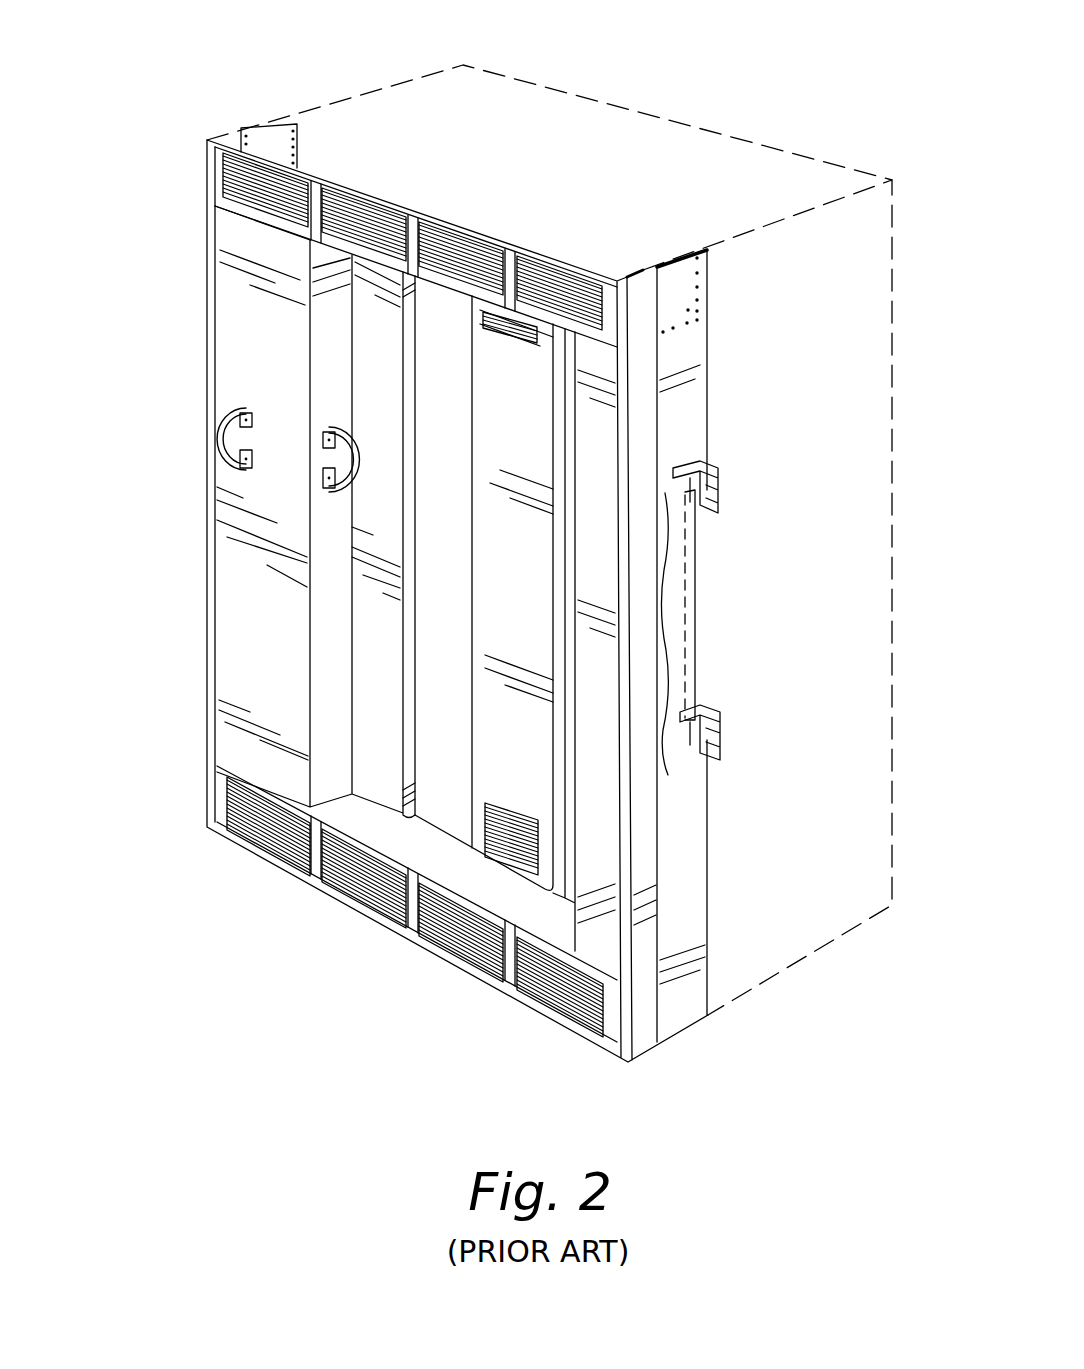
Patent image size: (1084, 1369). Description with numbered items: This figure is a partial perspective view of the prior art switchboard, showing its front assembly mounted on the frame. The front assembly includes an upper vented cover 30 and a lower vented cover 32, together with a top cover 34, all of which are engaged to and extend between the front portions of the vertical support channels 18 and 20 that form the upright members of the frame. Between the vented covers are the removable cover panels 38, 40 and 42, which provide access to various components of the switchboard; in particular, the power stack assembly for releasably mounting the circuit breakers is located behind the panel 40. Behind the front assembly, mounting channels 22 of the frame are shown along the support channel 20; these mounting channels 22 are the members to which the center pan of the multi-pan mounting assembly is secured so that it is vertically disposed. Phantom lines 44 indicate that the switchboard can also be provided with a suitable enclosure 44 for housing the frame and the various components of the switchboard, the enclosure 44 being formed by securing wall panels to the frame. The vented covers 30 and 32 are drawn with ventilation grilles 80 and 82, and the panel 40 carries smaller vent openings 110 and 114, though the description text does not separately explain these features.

The vertical support channel 18 is at (275, 124).
The vertical support channel 20 is at (683, 250).
The mounting channel 22 is at (718, 507).
The upper vented cover 30 is at (410, 216).
The lower vented cover 32 is at (417, 940).
The top cover 34 is at (287, 228).
The removable cover panel 38 is at (380, 407).
The removable cover panel 40 is at (493, 579).
The removable cover panel 42 is at (590, 745).
The enclosure 44 is at (395, 78).
The lower ventilation grille 80 is at (353, 890).
The upper ventilation grille 82 is at (300, 168).
The lower vent 110 is at (497, 807).
The upper vent 114 is at (520, 334).